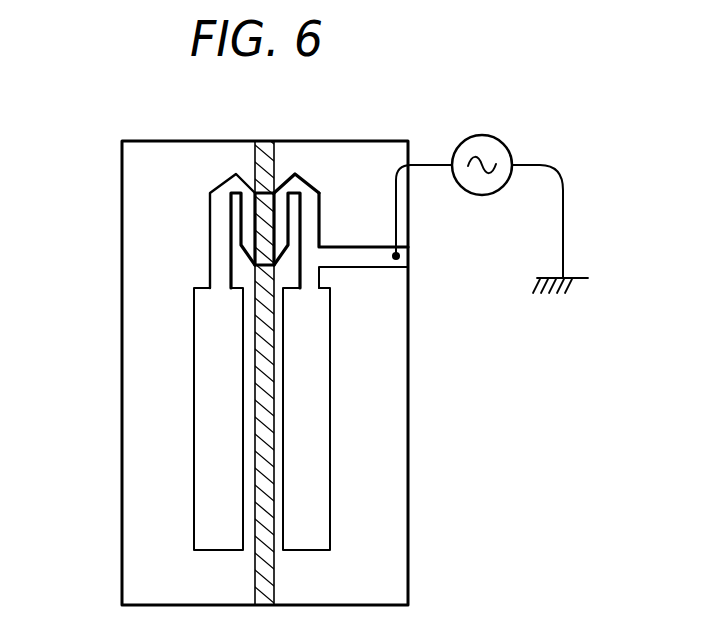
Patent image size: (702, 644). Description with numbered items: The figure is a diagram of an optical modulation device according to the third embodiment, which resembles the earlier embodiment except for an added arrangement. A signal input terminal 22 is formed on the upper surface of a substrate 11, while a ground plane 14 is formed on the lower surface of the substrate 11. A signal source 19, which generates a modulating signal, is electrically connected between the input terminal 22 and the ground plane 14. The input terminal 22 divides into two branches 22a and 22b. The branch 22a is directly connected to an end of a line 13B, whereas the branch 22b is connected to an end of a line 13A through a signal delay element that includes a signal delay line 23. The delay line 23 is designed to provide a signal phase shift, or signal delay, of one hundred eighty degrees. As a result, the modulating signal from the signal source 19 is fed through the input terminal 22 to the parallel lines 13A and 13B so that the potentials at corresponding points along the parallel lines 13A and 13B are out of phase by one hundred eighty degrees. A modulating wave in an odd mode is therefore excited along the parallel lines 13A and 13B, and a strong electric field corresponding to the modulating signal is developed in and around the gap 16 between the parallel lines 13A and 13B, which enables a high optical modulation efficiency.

The substrate 11 is at (304, 373).
The line 13A is at (136, 419).
The line 13B is at (387, 440).
The ground plane 14 is at (573, 238).
The gap 16 is at (203, 366).
The signal source 19 is at (477, 179).
The signal input terminal 22 is at (350, 110).
The branch 22a is at (401, 317).
The branch 22b is at (276, 152).
The signal delay line 23 is at (167, 223).